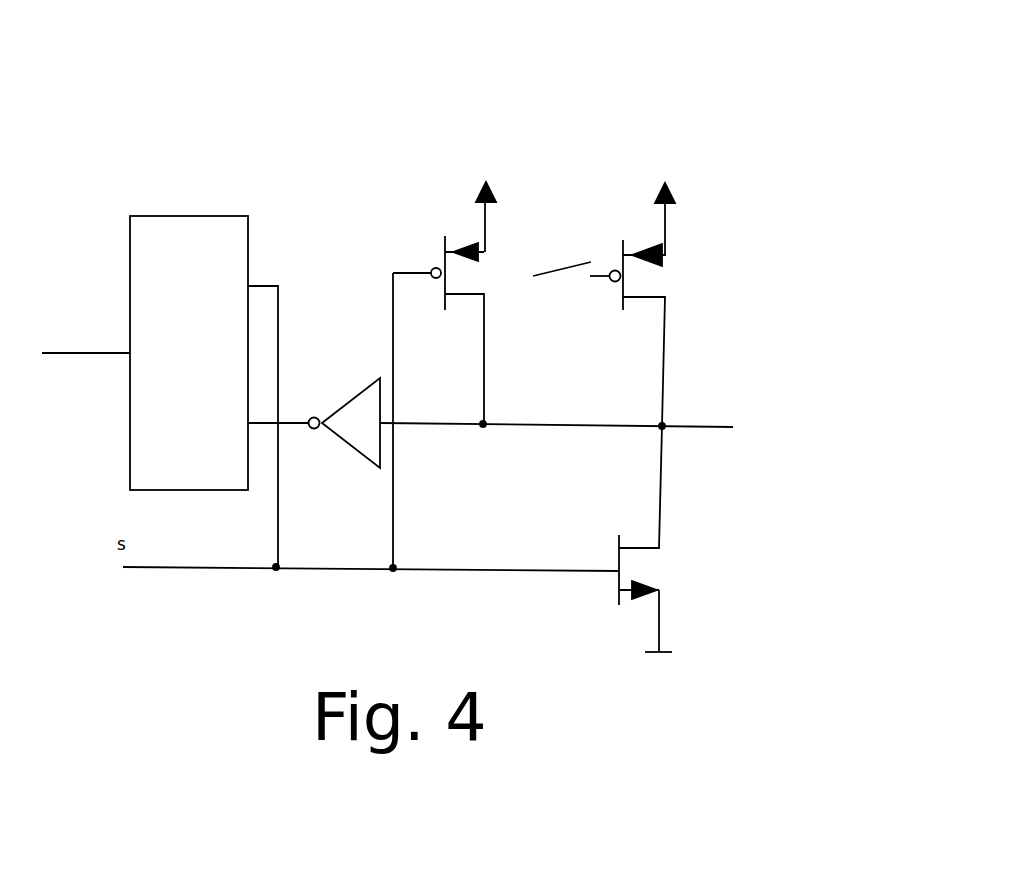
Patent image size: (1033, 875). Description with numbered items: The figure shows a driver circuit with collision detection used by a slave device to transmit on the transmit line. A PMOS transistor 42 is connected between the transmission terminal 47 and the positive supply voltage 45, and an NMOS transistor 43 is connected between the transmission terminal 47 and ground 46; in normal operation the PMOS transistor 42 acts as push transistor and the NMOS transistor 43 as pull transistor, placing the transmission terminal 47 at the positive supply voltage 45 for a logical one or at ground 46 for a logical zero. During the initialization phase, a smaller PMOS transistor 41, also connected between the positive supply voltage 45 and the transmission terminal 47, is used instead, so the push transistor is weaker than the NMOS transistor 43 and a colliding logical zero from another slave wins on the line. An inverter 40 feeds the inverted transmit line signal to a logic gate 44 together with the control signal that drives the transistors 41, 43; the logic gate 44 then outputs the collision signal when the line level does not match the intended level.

The inverter 40 is at (377, 412).
The PMOS transistor 41 is at (445, 238).
The PMOS transistor 42 is at (665, 242).
The NMOS transistor 43 is at (659, 589).
The logic gate 44 is at (167, 216).
The positive supply voltage 45 is at (488, 187).
The ground 46 is at (670, 653).
The transmission terminal 47 is at (733, 427).